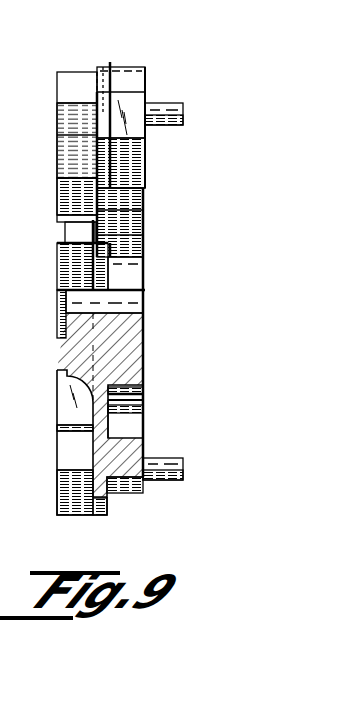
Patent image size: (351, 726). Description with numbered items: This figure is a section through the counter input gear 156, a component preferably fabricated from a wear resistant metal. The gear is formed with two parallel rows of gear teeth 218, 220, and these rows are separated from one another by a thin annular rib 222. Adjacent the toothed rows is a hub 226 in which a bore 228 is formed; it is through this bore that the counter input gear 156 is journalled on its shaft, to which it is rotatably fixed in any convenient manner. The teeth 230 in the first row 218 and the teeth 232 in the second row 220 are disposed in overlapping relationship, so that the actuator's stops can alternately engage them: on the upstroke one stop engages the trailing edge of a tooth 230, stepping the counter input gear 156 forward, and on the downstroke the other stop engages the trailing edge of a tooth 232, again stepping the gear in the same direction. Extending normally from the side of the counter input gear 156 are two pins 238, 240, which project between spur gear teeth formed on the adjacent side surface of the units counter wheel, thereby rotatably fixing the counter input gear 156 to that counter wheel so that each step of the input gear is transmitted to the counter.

The counter input gear 156 is at (90, 62).
The row of gear teeth 218 is at (53, 117).
The row of gear teeth 220 is at (152, 160).
The thin annular rib 222 is at (93, 418).
The hub 226 is at (143, 352).
The bore 228 is at (140, 313).
The teeth 230 is at (69, 133).
The teeth 232 is at (143, 180).
The pin 238 is at (190, 88).
The pin 240 is at (176, 480).